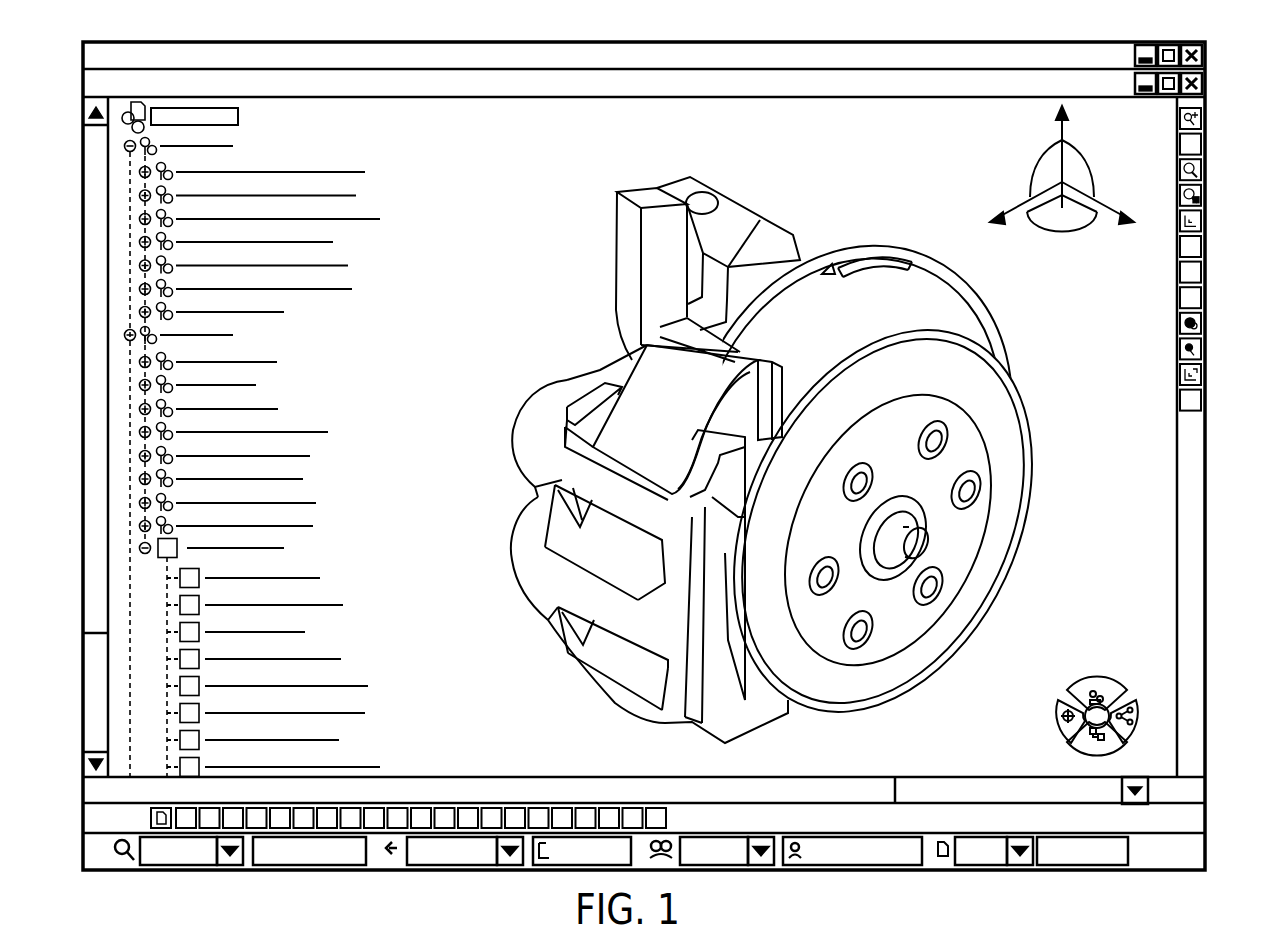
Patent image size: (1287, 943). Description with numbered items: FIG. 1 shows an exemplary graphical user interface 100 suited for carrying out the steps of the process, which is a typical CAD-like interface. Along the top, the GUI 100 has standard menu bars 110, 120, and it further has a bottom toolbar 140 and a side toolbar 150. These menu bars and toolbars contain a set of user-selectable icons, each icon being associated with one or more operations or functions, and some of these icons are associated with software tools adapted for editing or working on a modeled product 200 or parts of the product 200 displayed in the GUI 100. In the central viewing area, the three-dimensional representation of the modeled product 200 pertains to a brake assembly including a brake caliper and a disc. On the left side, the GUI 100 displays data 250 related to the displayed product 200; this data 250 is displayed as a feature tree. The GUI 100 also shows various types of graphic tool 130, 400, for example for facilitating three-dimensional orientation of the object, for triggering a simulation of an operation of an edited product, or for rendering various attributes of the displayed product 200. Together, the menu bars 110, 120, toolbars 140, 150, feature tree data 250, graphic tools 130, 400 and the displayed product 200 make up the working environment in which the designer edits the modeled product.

The graphical user interface 100 is at (1004, 704).
The menu bar 110 is at (1100, 50).
The menu bar 120 is at (918, 80).
The graphic tool 130 is at (1068, 217).
The bottom toolbar 140 is at (644, 791).
The side toolbar 150 is at (1185, 470).
The modeled product 200 is at (593, 337).
The data 250 is at (309, 433).
The graphic tool 400 is at (1103, 670).